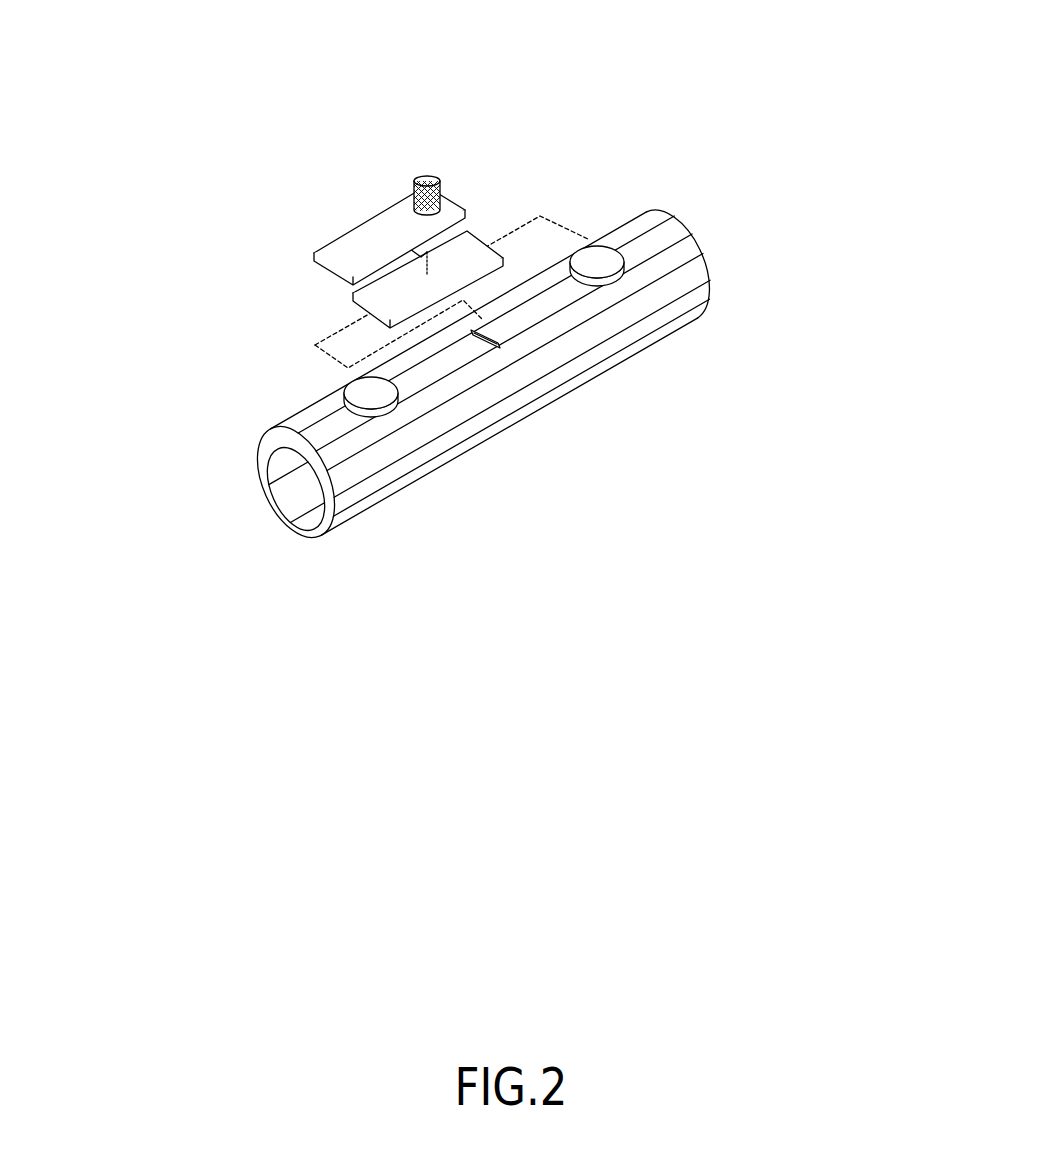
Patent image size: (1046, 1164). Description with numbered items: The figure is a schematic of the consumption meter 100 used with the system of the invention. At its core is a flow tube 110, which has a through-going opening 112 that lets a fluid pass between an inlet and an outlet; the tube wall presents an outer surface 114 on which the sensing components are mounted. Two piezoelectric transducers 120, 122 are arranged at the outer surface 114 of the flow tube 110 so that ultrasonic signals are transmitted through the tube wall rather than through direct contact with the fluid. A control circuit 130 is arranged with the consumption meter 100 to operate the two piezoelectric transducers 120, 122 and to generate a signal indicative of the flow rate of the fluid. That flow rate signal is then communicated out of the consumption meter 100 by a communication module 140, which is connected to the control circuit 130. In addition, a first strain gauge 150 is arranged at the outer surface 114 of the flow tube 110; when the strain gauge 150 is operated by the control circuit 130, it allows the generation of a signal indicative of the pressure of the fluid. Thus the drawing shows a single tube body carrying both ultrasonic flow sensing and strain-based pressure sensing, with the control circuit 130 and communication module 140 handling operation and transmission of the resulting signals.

The consumption meter 100 is at (239, 281).
The flow tube 110 is at (260, 451).
The through-going opening 112 is at (288, 489).
The outer surface 114 is at (543, 305).
The piezoelectric transducer 120 is at (383, 397).
The piezoelectric transducer 122 is at (603, 265).
The control circuit 130 is at (480, 238).
The communication module 140 is at (453, 203).
The first strain gauge 150 is at (488, 338).